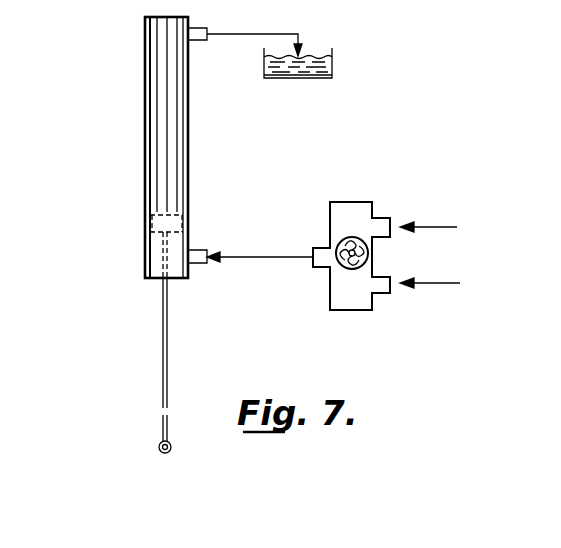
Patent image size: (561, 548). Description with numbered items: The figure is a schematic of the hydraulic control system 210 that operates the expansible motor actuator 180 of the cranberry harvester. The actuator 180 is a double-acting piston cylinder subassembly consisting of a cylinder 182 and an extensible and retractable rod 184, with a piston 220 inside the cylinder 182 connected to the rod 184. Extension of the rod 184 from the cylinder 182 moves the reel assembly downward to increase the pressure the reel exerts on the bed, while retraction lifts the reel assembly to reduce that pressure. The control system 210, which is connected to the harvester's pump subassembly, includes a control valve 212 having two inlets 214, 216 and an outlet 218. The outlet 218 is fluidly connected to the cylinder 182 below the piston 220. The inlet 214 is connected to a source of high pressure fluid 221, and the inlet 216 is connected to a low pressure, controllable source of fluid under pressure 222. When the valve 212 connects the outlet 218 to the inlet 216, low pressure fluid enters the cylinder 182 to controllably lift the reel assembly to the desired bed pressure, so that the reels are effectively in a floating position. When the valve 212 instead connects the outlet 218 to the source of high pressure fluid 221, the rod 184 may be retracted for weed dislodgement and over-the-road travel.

The expansible motor actuator 180 is at (141, 127).
The cylinder 182 is at (176, 151).
The rod 184 is at (168, 356).
The hydraulic control system 210 is at (374, 86).
The control valve 212 is at (400, 152).
The inlet 214 is at (380, 222).
The inlet 216 is at (380, 285).
The outlet 218 is at (322, 252).
The piston 220 is at (149, 225).
The source of high pressure fluid 221 is at (440, 225).
The low pressure, controllable source of fluid under pressure 222 is at (442, 280).